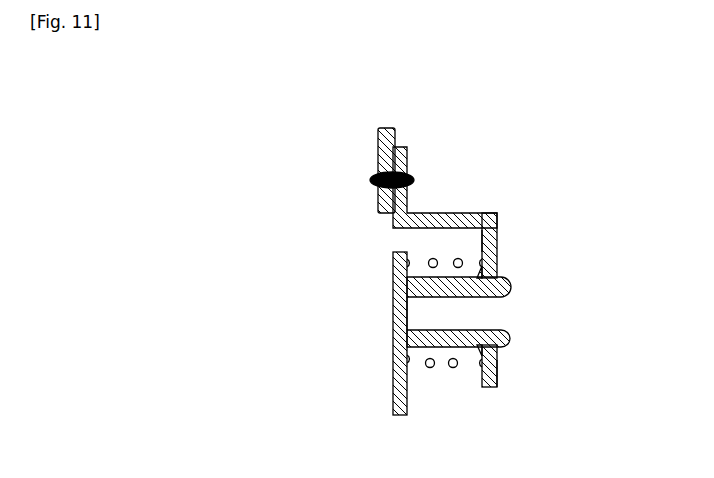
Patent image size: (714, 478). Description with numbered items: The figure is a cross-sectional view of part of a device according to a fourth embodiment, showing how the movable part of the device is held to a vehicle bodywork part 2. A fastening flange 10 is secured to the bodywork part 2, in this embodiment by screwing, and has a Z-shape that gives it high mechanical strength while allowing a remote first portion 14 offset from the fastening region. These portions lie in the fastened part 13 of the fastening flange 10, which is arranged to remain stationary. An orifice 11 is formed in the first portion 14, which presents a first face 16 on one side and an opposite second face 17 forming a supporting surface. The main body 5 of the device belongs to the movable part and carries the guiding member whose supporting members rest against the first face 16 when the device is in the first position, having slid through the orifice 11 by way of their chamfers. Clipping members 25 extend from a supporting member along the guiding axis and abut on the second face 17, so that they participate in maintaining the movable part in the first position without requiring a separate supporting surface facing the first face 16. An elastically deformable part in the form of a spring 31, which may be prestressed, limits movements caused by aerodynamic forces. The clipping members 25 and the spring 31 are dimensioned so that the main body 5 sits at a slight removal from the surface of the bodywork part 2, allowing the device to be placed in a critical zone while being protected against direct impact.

The bodywork part 2 is at (380, 157).
The fastening flange 10 is at (473, 193).
The fastened part 13 is at (480, 213).
The first face 16 is at (480, 252).
The clipping members 25 is at (508, 284).
The orifice 11 is at (504, 312).
The first portion 14 is at (497, 364).
The second face 17 is at (501, 378).
The spring 31 is at (454, 381).
The main body 5 is at (392, 407).